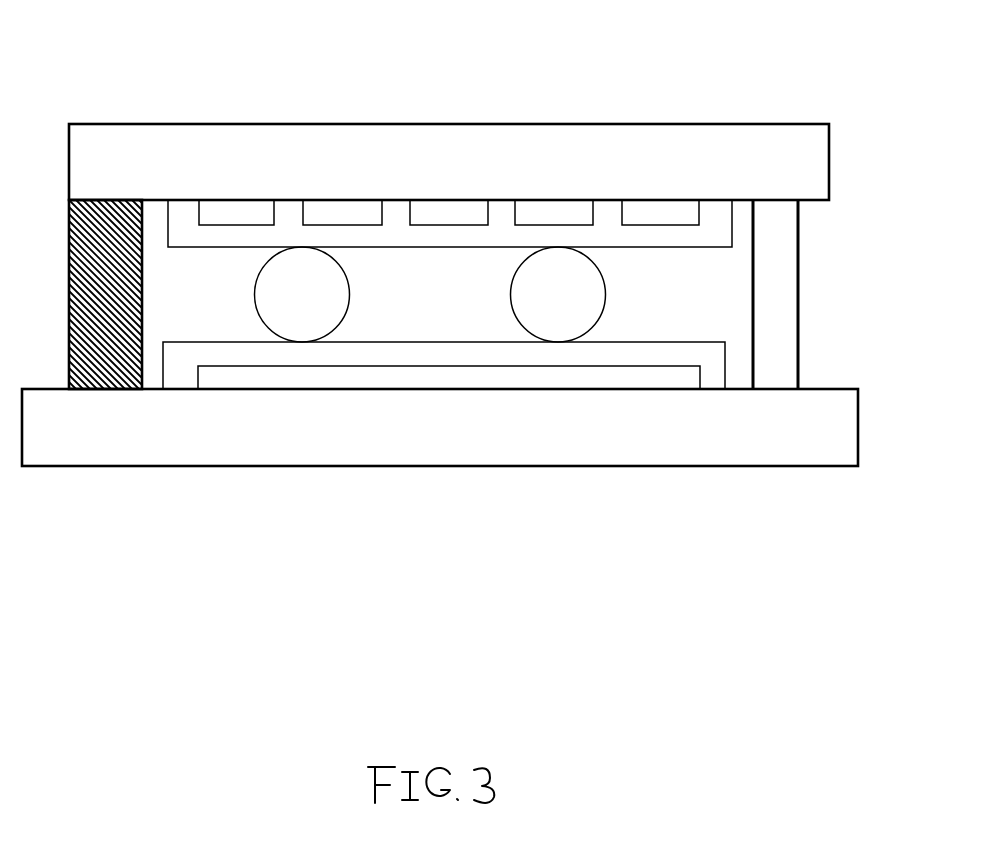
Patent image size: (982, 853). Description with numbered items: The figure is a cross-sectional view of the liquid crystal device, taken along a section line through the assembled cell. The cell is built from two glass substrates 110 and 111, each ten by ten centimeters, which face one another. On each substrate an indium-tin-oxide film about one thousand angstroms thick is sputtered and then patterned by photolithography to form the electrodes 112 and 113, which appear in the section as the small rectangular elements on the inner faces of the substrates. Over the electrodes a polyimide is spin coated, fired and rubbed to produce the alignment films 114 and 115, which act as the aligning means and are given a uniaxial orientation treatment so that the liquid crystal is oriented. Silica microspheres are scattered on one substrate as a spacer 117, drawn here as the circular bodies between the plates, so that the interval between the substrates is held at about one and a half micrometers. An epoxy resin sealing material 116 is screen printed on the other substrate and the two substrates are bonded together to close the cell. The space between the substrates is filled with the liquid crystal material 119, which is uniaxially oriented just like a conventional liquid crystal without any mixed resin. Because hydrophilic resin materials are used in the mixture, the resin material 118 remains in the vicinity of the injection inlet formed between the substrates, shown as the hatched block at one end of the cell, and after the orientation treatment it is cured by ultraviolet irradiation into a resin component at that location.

The substrate 110 is at (115, 163).
The substrate 111 is at (658, 440).
The electrode 112 is at (244, 212).
The electrode 113 is at (497, 370).
The alignment film 114 is at (503, 235).
The alignment film 115 is at (350, 350).
The sealing material 116 is at (783, 272).
The spacer 117 is at (293, 315).
The resin material 118 is at (118, 390).
The liquid crystal material 119 is at (722, 278).